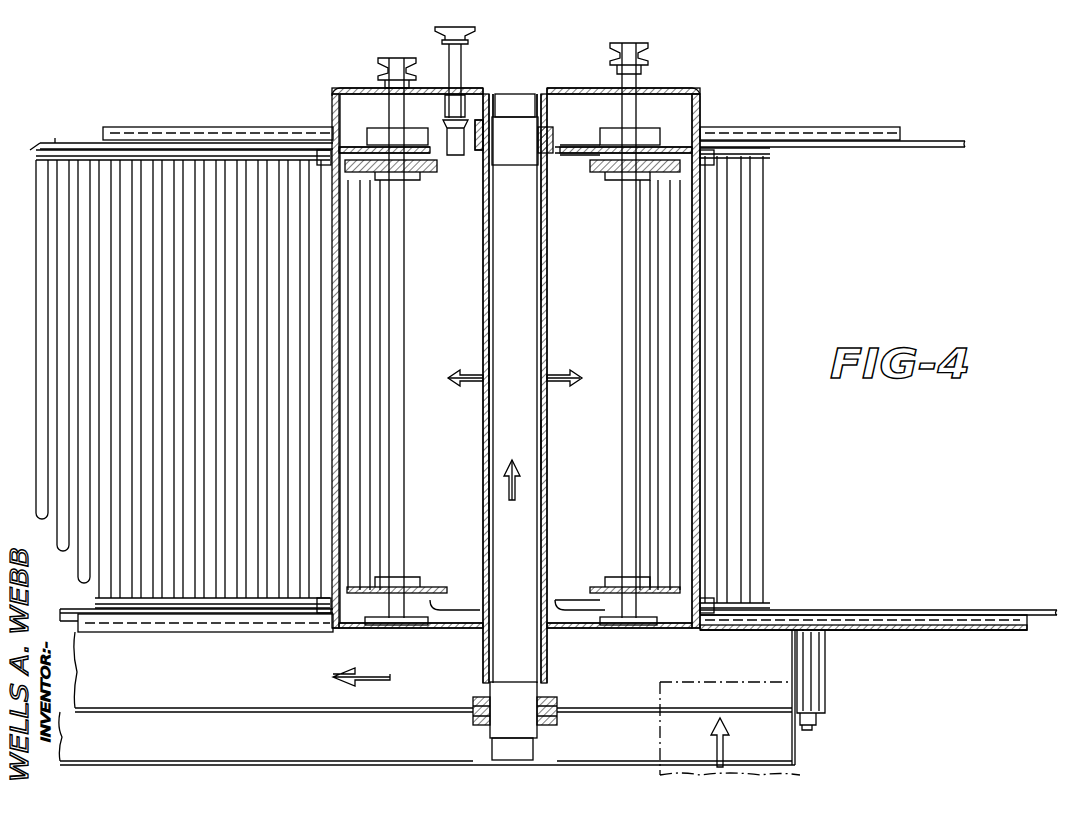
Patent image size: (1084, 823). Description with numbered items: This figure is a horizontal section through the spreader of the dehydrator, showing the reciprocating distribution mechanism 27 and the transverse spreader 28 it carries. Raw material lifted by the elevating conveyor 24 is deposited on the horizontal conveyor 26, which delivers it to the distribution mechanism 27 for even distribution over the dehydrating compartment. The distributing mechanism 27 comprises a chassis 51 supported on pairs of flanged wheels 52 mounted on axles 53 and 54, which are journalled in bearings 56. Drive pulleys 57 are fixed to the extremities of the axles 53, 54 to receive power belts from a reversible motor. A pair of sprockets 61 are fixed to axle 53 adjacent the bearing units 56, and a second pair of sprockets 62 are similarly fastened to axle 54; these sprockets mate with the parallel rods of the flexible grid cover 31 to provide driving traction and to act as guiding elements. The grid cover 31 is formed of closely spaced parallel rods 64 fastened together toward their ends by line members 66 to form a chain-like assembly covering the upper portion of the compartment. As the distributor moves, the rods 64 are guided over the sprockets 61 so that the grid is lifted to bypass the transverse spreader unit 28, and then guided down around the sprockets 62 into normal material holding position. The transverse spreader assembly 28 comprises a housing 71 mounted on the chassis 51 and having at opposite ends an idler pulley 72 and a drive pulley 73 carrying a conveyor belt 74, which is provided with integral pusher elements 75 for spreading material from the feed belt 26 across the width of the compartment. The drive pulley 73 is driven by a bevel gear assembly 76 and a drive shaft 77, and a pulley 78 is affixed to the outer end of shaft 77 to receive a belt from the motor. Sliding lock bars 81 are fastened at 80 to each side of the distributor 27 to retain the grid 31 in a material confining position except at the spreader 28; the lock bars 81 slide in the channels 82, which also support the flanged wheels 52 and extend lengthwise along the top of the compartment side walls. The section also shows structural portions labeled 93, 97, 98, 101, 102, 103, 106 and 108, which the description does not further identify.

The elevating conveyor 24 is at (798, 765).
The horizontal conveyor 26 is at (434, 697).
The reciprocating distribution mechanism 27 is at (539, 78).
The transverse spreader 28 is at (481, 244).
The flexible grid cover 31 is at (398, 379).
The chassis 51 is at (574, 610).
The flanged wheels 52 is at (378, 126).
The axle 53 is at (401, 334).
The axle 54 is at (626, 343).
The bearings 56 is at (602, 154).
The drive pulleys 57 is at (388, 60).
The sprockets 61 is at (414, 174).
The sprockets 62 is at (604, 178).
The parallel rods 64 is at (70, 336).
The line members 66 is at (42, 164).
The housing 71 is at (552, 446).
The idler pulley 72 is at (484, 691).
The drive pulley 73 is at (515, 129).
The conveyor belt 74 is at (515, 399).
The pusher elements 75 is at (521, 90).
The bevel gear assembly 76 is at (470, 144).
The drive shaft 77 is at (462, 58).
The pulley 78 is at (464, 30).
The fastening location 80 is at (322, 142).
The sliding lock bars 81 is at (72, 140).
The channels 82 is at (174, 128).
The roller 93 is at (816, 720).
The lower frame 97 is at (427, 738).
The bottom plate 98 is at (715, 633).
The inner wall 101 is at (484, 430).
The outer wall 102 is at (546, 286).
The nut 103 is at (480, 730).
The housing top 106 is at (684, 88).
The partition 108 is at (345, 98).